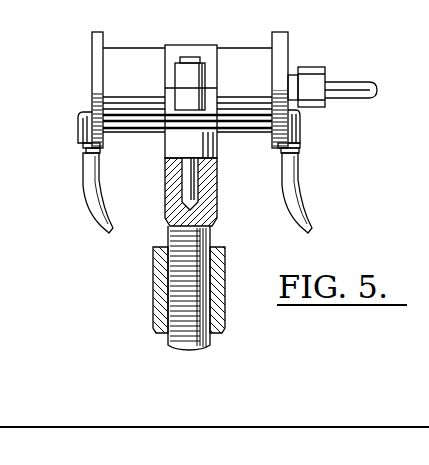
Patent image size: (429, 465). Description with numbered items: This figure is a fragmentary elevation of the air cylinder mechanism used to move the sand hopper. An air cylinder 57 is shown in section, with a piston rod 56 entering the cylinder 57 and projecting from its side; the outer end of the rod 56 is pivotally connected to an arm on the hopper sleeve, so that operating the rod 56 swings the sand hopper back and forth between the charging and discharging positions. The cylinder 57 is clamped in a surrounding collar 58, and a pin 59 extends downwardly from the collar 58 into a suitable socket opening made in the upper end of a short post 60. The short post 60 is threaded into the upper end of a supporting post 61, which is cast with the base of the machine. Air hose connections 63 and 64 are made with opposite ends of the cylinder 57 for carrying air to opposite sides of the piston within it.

The piston rod 56 is at (350, 86).
The air cylinder 57 is at (235, 57).
The surrounding collar 58 is at (175, 127).
The pin 59 is at (215, 190).
The short post 60 is at (212, 240).
The supporting post 61 is at (222, 289).
The air hose connection 63 is at (90, 193).
The air hose connection 64 is at (297, 205).